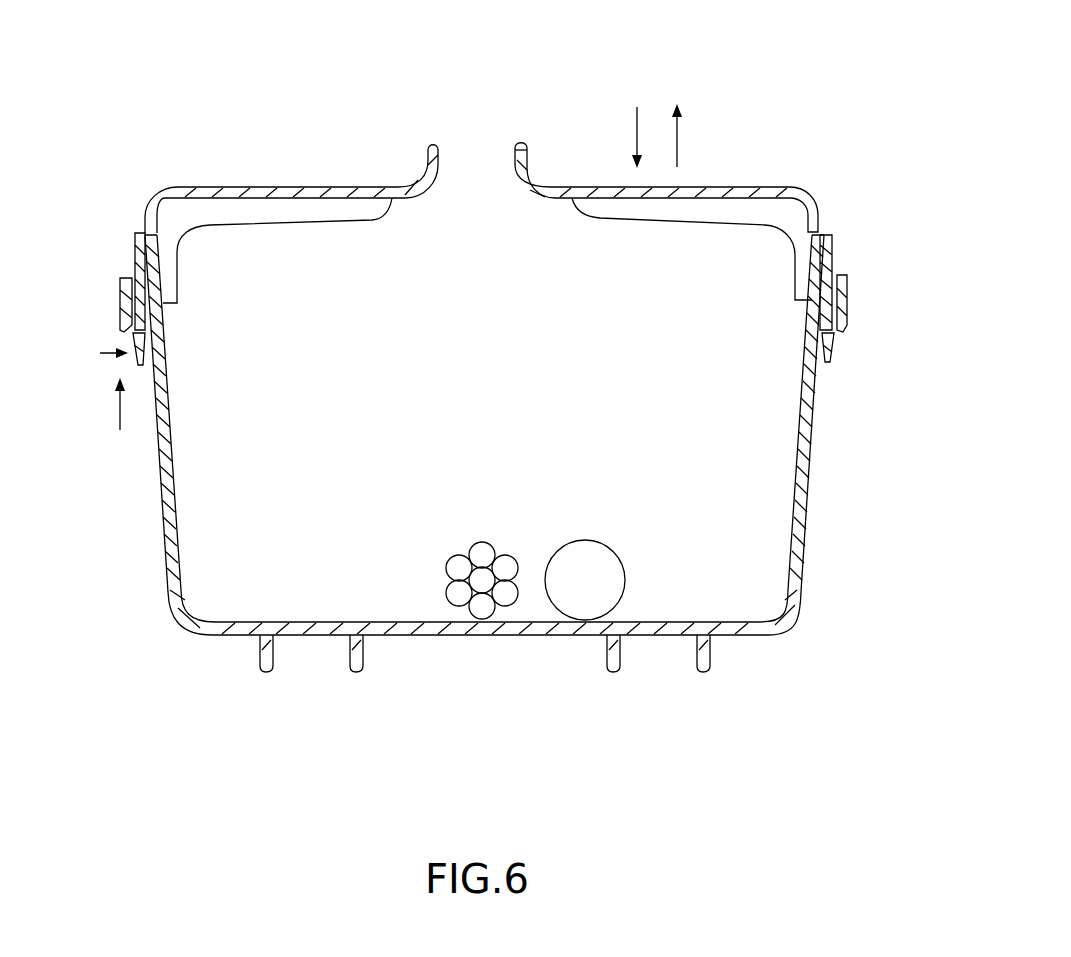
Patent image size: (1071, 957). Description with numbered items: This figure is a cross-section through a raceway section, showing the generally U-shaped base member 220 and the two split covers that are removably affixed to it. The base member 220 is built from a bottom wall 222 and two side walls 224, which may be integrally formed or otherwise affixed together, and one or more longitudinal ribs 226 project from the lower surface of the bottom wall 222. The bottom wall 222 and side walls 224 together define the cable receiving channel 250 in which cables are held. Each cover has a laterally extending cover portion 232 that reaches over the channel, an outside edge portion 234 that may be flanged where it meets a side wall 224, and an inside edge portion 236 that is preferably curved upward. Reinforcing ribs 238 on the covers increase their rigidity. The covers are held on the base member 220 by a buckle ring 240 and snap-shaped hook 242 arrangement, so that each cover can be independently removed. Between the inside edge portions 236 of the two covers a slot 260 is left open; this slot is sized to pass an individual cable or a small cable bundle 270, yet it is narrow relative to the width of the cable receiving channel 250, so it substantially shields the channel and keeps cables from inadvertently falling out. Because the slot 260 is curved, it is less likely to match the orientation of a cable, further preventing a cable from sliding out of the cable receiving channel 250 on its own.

The base member 220 is at (504, 499).
The bottom wall 222 is at (545, 635).
The side wall 224 is at (162, 528).
The longitudinal rib 226 is at (617, 672).
The cover portion 232 is at (693, 187).
The outside edge portion 234 is at (818, 213).
The inside edge portion 236 is at (518, 172).
The reinforcing rib 238 is at (715, 205).
The buckle ring 240 is at (847, 280).
The snap-shaped hook 242 is at (834, 347).
The cable receiving channel 250 is at (500, 420).
The slot 260 is at (514, 236).
The cable bundle 270 is at (487, 543).